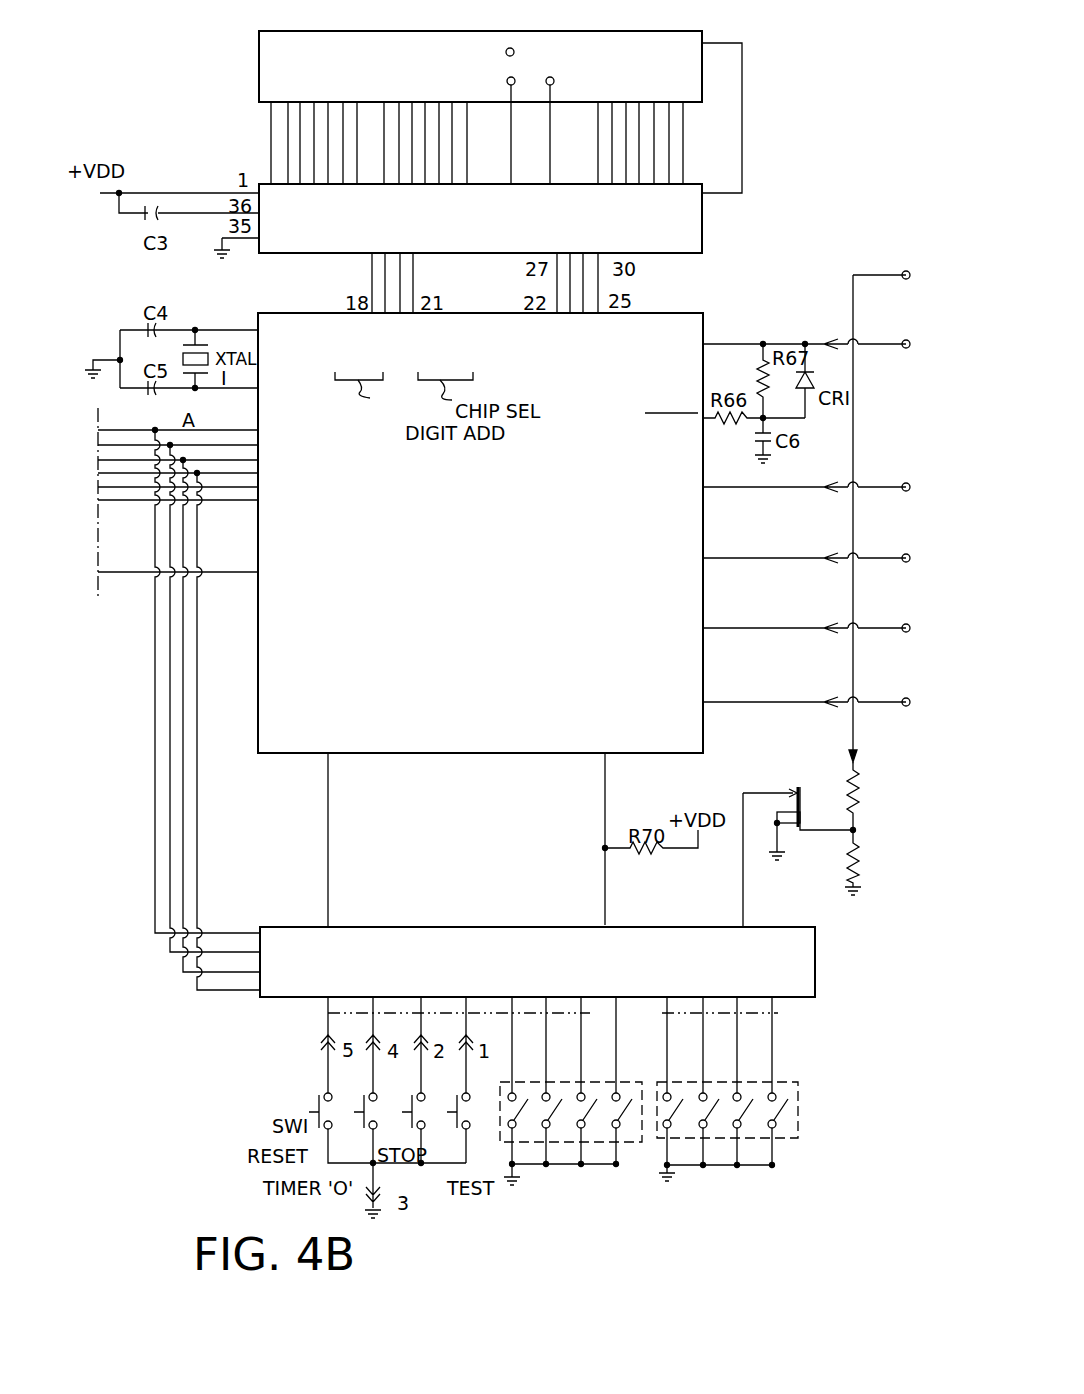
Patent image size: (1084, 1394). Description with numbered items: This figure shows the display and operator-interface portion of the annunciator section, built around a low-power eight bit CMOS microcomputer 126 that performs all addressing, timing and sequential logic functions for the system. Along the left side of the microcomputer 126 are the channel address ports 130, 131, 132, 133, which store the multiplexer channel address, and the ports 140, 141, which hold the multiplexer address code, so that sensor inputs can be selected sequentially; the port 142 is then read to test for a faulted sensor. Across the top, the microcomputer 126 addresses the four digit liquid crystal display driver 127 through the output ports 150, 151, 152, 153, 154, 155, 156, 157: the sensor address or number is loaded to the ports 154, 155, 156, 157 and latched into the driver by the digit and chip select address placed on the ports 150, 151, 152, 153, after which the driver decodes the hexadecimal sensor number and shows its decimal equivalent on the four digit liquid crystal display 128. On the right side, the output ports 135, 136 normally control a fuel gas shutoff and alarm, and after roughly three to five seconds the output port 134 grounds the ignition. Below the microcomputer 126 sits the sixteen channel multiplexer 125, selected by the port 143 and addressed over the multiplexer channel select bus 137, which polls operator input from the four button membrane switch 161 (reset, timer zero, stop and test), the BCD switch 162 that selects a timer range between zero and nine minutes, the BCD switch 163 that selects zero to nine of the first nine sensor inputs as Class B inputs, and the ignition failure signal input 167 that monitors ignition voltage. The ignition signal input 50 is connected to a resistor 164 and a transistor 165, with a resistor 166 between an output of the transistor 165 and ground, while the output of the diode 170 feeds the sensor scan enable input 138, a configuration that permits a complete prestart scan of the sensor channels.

The ignition signal input 50 is at (888, 215).
The multiplexer 125 is at (505, 968).
The microcomputer 126 is at (490, 496).
The liquid crystal display driver 127 is at (665, 228).
The liquid crystal display 128 is at (412, 61).
The channel address port 130 is at (300, 436).
The channel address port 131 is at (265, 448).
The channel address port 132 is at (265, 461).
The channel address port 133 is at (265, 474).
The output port 134 is at (655, 560).
The output port 135 is at (652, 633).
The output port 136 is at (656, 702).
The multiplexer channel select bus 137 is at (592, 724).
The sensor scan enable input 138 is at (682, 421).
The multiplexer address port 140 is at (300, 490).
The multiplexer address port 141 is at (265, 502).
The sensor input port 142 is at (203, 589).
The multiplexer select port 143 is at (345, 725).
The output port 150 is at (370, 318).
The output port 151 is at (383, 318).
The output port 152 is at (400, 318).
The output port 153 is at (420, 318).
The output port 154 is at (552, 318).
The output port 155 is at (567, 318).
The output port 156 is at (582, 318).
The output port 157 is at (597, 318).
The membrane switch 161 is at (362, 1080).
The BCD switch 162 is at (571, 1132).
The BCD switch 163 is at (727, 1121).
The resistor 164 is at (875, 796).
The transistor 165 is at (798, 834).
The resistor 166 is at (874, 862).
The ignition failure signal input 167 is at (748, 938).
The diode 170 is at (822, 388).